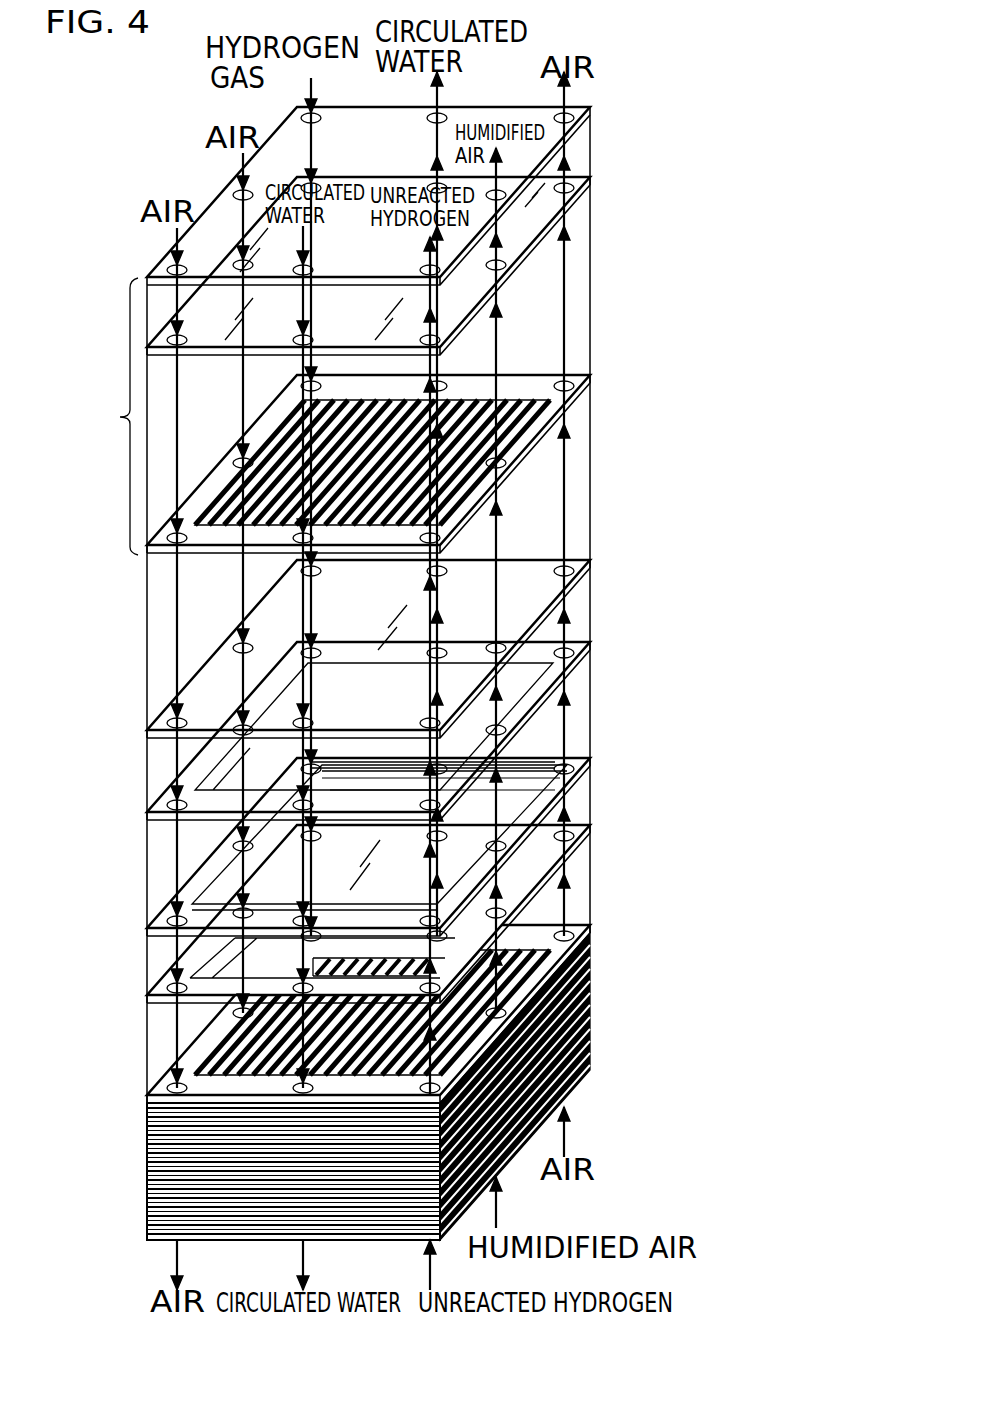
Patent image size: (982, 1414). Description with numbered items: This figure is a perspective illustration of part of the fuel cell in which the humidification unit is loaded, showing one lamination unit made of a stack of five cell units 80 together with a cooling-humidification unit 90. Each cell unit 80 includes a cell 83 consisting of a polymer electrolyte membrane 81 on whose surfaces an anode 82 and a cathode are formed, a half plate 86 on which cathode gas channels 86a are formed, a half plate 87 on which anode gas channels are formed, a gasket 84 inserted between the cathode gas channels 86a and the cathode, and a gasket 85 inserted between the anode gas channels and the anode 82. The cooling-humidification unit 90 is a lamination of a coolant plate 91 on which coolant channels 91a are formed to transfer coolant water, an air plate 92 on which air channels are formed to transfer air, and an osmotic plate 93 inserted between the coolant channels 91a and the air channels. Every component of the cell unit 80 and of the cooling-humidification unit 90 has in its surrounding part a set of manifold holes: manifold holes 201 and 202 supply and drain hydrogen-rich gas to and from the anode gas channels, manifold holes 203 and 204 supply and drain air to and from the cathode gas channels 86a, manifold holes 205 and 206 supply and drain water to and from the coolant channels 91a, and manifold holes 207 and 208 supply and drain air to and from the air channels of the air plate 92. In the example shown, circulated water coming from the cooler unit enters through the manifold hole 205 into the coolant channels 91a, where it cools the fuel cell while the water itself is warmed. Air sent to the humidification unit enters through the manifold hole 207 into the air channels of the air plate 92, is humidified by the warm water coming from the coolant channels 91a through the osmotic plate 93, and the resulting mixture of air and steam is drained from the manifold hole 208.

The cell unit 80 is at (152, 1240).
The polymer electrolyte membrane 81 is at (570, 775).
The anode 82 is at (505, 793).
The cell 83 is at (605, 760).
The gasket 84 is at (588, 843).
The gasket 85 is at (592, 650).
The half plate 86 is at (530, 940).
The cathode gas channels 86a is at (545, 912).
The half plate 87 is at (603, 558).
The cooling-humidification unit 90 is at (112, 416).
The coolant plate 91 is at (578, 420).
The coolant channels 91a is at (478, 398).
The air plate 92 is at (567, 128).
The osmotic plate 93 is at (568, 203).
The manifold hole 201 is at (316, 124).
The manifold hole 202 is at (425, 266).
The manifold hole 203 is at (182, 263).
The manifold hole 204 is at (560, 112).
The manifold hole 205 is at (308, 262).
The manifold hole 206 is at (432, 124).
The manifold hole 207 is at (245, 188).
The manifold hole 208 is at (492, 185).